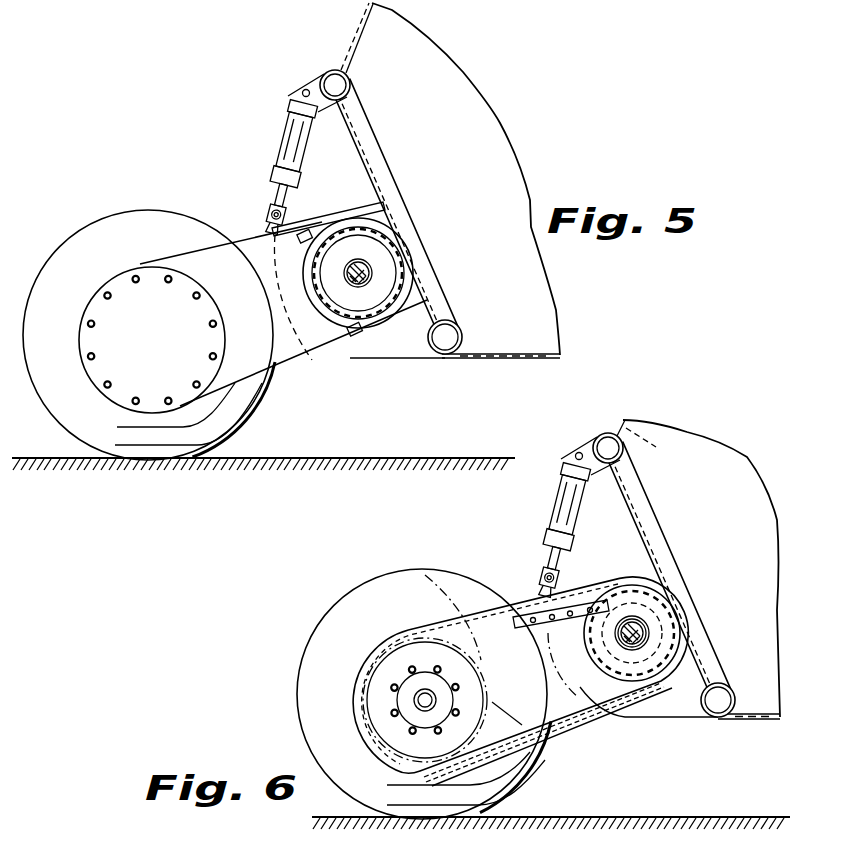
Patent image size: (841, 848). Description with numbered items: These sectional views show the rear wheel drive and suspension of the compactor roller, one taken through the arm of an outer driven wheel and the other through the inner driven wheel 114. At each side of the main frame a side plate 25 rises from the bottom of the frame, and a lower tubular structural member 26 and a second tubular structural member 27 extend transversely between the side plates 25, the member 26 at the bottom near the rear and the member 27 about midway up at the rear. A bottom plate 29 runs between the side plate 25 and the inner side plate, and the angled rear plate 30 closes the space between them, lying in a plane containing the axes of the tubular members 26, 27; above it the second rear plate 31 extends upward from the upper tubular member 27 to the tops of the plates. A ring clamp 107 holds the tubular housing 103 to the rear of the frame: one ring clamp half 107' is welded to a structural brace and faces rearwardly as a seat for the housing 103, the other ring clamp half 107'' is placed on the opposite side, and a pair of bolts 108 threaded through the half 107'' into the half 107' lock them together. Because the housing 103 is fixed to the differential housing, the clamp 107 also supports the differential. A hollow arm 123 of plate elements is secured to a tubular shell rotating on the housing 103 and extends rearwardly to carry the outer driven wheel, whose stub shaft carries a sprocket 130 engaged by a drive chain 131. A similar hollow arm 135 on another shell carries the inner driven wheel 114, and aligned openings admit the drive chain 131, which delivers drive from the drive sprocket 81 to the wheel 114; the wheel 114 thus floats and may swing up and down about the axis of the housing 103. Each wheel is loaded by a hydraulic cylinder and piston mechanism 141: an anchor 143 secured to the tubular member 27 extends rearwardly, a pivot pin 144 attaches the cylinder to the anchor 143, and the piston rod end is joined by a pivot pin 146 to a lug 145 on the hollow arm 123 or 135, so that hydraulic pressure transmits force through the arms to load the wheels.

In FIG. 5, the side plate 25 is at (390, 352).
In FIG. 6, the side plate 25 is at (645, 717).
In FIG. 5, the tubular structural member 26 is at (443, 356).
In FIG. 6, the tubular structural member 26 is at (716, 718).
In FIG. 5, the second tubular structural member 27 is at (336, 70).
In FIG. 6, the second tubular structural member 27 is at (609, 433).
In FIG. 5, the bottom plate 29 is at (500, 358).
In FIG. 6, the bottom plate 29 is at (770, 720).
In FIG. 5, the rear plate 30 is at (392, 172).
In FIG. 6, the rear plate 30 is at (662, 526).
In FIG. 5, the second rear plate 31 is at (366, 40).
In FIG. 6, the second rear plate 31 is at (657, 445).
In FIG. 6, the drive sprocket 81 is at (690, 625).
In FIG. 5, the tubular housing 103 is at (398, 252).
In FIG. 5, the ring clamp 107 is at (391, 257).
In FIG. 5, the ring clamp half 107' is at (414, 273).
In FIG. 5, the ring clamp half 107'' is at (297, 288).
In FIG. 5, the bolts 108 is at (300, 242).
In FIG. 5, the inner driven wheel 114 is at (100, 228).
In FIG. 6, the inner driven wheel 114 is at (312, 652).
In FIG. 5, the hollow arm 123 is at (273, 345).
In FIG. 6, the sprocket 130 is at (527, 720).
In FIG. 6, the drive chain 131 is at (448, 600).
In FIG. 6, the hollow arm 135 is at (575, 702).
In FIG. 5, the hydraulic cylinder and piston mechanism 141 is at (285, 135).
In FIG. 6, the hydraulic cylinder and piston mechanism 141 is at (560, 500).
In FIG. 5, the anchor 143 is at (316, 80).
In FIG. 6, the anchor 143 is at (590, 443).
In FIG. 5, the pivot pin 144 is at (302, 91).
In FIG. 6, the pivot pin 144 is at (575, 454).
In FIG. 5, the lug 145 is at (285, 228).
In FIG. 6, the lug 145 is at (560, 590).
In FIG. 5, the pivot pin 146 is at (268, 214).
In FIG. 6, the pivot pin 146 is at (540, 575).